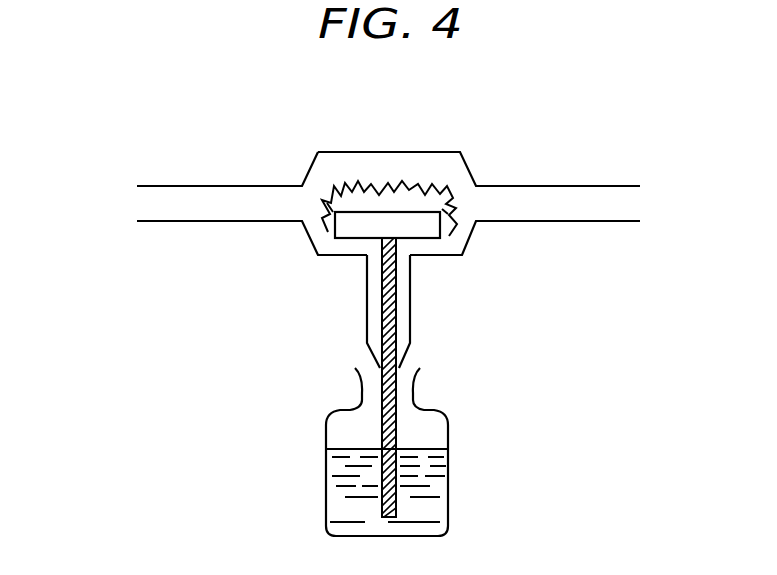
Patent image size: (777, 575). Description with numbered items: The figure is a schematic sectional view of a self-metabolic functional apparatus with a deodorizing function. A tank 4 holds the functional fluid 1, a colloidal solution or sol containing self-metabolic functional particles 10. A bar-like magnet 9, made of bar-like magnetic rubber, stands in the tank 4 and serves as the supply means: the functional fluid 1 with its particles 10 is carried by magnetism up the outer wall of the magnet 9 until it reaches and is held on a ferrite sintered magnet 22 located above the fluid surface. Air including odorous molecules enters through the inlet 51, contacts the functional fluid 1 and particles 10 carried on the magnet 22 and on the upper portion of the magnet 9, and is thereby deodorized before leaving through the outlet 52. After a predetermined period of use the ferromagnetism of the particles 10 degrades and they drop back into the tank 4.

The functional fluid 1 is at (437, 477).
The tank 4 is at (447, 455).
The bar-like magnet 9 is at (396, 300).
The self-metabolic functional particles 10 is at (416, 203).
The magnet 22 is at (428, 232).
The inlet 51 is at (38, 201).
The gas outlet flow 52 is at (708, 203).